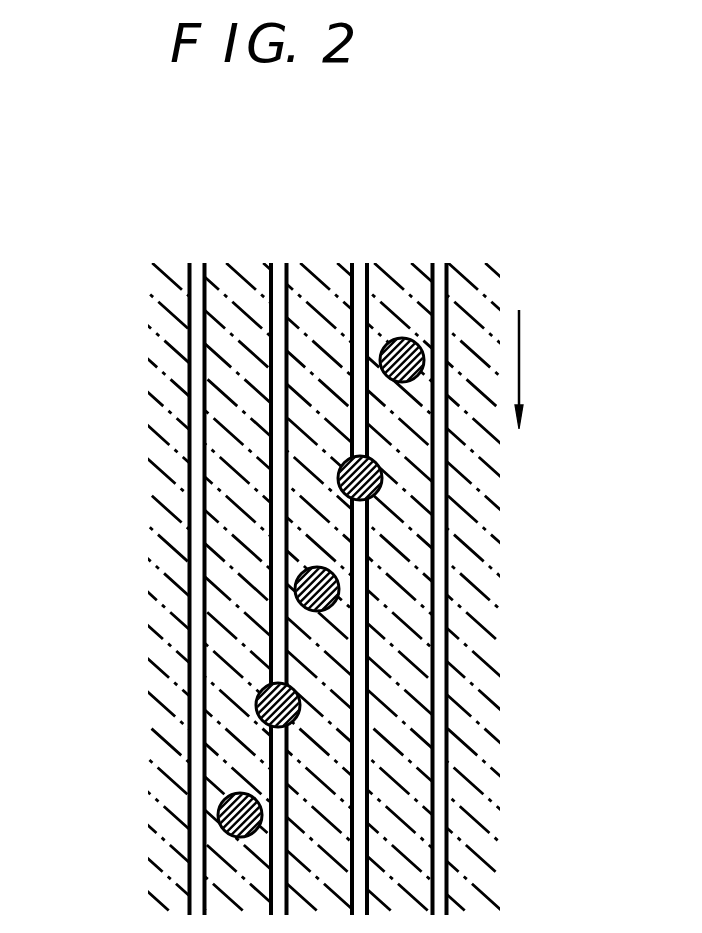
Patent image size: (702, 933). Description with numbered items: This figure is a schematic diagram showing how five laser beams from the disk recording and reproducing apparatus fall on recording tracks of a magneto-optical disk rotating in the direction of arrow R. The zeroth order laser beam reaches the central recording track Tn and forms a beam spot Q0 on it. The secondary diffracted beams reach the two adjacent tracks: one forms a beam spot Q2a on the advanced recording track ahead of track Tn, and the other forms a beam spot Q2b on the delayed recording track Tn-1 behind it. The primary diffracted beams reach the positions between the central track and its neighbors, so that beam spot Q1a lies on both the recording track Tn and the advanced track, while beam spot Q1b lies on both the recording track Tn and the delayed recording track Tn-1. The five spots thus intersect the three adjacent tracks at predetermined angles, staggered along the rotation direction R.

The delayed recording track Tn-1 is at (231, 280).
The recording track Tn is at (330, 277).
The arrow R is at (531, 369).
The beam spot Q0 is at (339, 592).
The beam spot Q1a is at (383, 482).
The beam spot Q2a is at (421, 370).
The beam spot Q1b is at (257, 710).
The beam spot Q2b is at (217, 813).